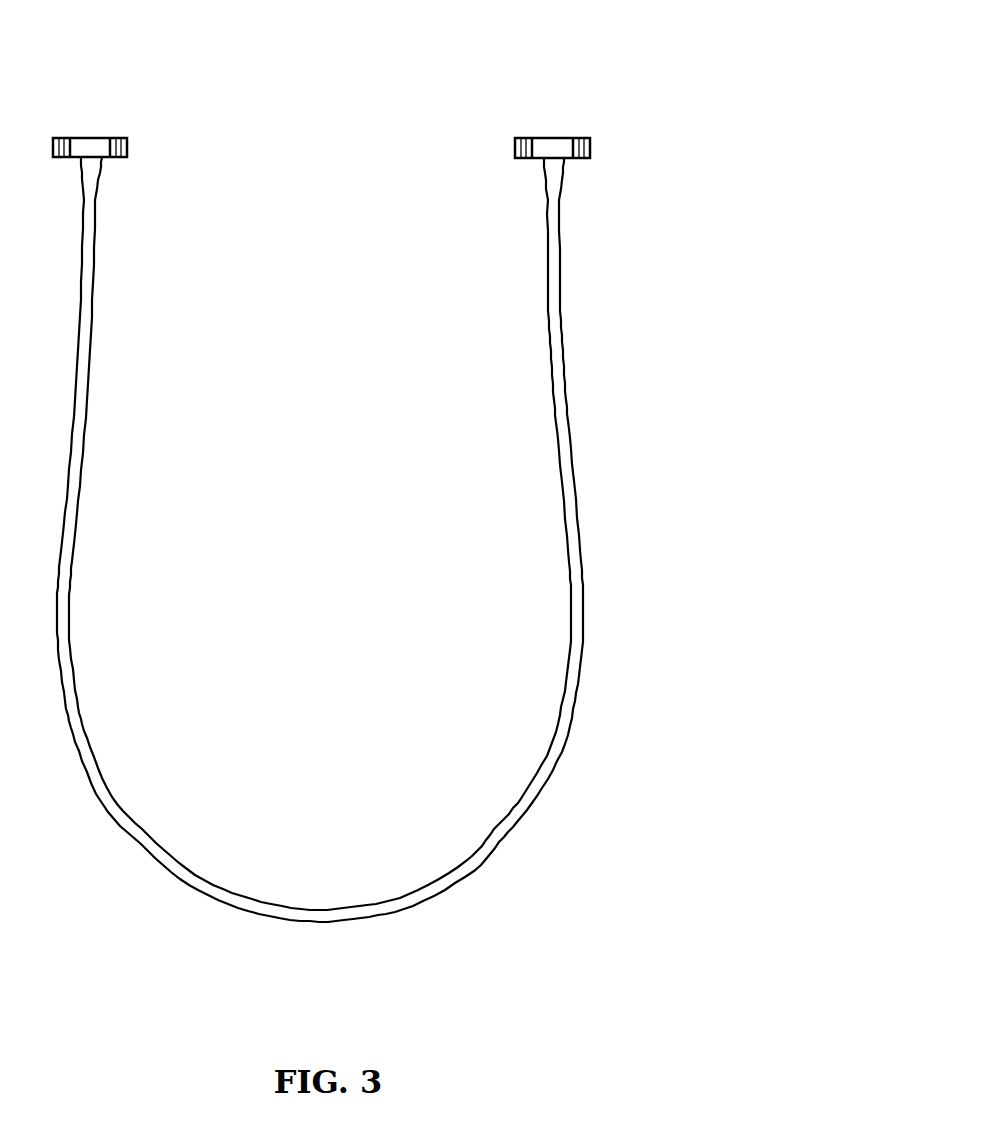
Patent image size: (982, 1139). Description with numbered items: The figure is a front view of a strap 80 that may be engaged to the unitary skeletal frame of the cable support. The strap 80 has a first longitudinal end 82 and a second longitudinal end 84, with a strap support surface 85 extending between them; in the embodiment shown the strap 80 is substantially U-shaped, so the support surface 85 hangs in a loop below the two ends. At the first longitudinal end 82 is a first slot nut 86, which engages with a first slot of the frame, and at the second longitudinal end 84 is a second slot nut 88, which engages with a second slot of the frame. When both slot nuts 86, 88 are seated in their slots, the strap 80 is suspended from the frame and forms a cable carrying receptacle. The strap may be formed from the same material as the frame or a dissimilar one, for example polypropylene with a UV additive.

The strap 80 is at (655, 120).
The first longitudinal end 82 is at (150, 138).
The second longitudinal end 84 is at (535, 128).
The strap support surface 85 is at (192, 880).
The first slot nut 86 is at (88, 148).
The second slot nut 88 is at (557, 147).